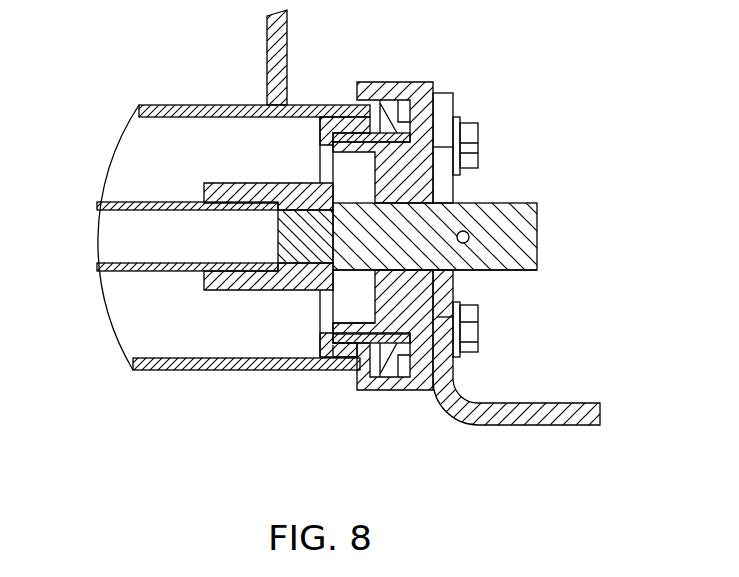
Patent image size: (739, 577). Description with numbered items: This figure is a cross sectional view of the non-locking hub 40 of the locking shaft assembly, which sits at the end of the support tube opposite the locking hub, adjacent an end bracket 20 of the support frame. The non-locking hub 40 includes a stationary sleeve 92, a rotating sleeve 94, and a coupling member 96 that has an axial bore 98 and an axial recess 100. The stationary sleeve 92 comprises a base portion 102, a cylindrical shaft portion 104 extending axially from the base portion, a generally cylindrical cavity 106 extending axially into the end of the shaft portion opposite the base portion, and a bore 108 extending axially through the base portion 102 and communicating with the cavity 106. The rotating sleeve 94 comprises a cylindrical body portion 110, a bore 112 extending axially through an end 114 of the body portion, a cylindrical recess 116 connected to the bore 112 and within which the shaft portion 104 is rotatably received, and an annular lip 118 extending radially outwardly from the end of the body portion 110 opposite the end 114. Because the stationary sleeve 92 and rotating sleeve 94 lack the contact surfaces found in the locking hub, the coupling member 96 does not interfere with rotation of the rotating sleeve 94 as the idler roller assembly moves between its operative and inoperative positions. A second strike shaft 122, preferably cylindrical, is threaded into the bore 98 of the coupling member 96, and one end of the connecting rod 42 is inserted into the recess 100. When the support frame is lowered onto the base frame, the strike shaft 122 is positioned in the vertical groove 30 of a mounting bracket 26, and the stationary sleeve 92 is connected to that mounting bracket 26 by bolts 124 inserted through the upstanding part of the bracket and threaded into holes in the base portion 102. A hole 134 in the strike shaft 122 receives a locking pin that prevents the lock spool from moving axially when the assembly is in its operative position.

The end bracket 20 is at (268, 42).
The mounting bracket 26 is at (553, 428).
The vertical groove 30 is at (448, 188).
The non-locking hub 40 is at (446, 80).
The connecting rod 42 is at (118, 273).
The stationary sleeve 92 is at (410, 80).
The rotating sleeve 94 is at (326, 106).
The coupling member 96 is at (214, 181).
The axial bore 98 is at (284, 234).
The axial recess 100 is at (218, 206).
The base portion 102 is at (410, 392).
The cylindrical shaft portion 104 is at (333, 368).
The cylindrical cavity 106 is at (357, 322).
The bore 108 is at (455, 270).
The cylindrical body portion 110 is at (338, 357).
The bore 112 is at (338, 335).
The end 114 is at (340, 352).
The cylindrical recess 116 is at (453, 317).
The annular lip 118 is at (377, 388).
The second strike shaft 122 is at (524, 202).
The bolt 124 is at (478, 130).
The hole 134 is at (470, 236).